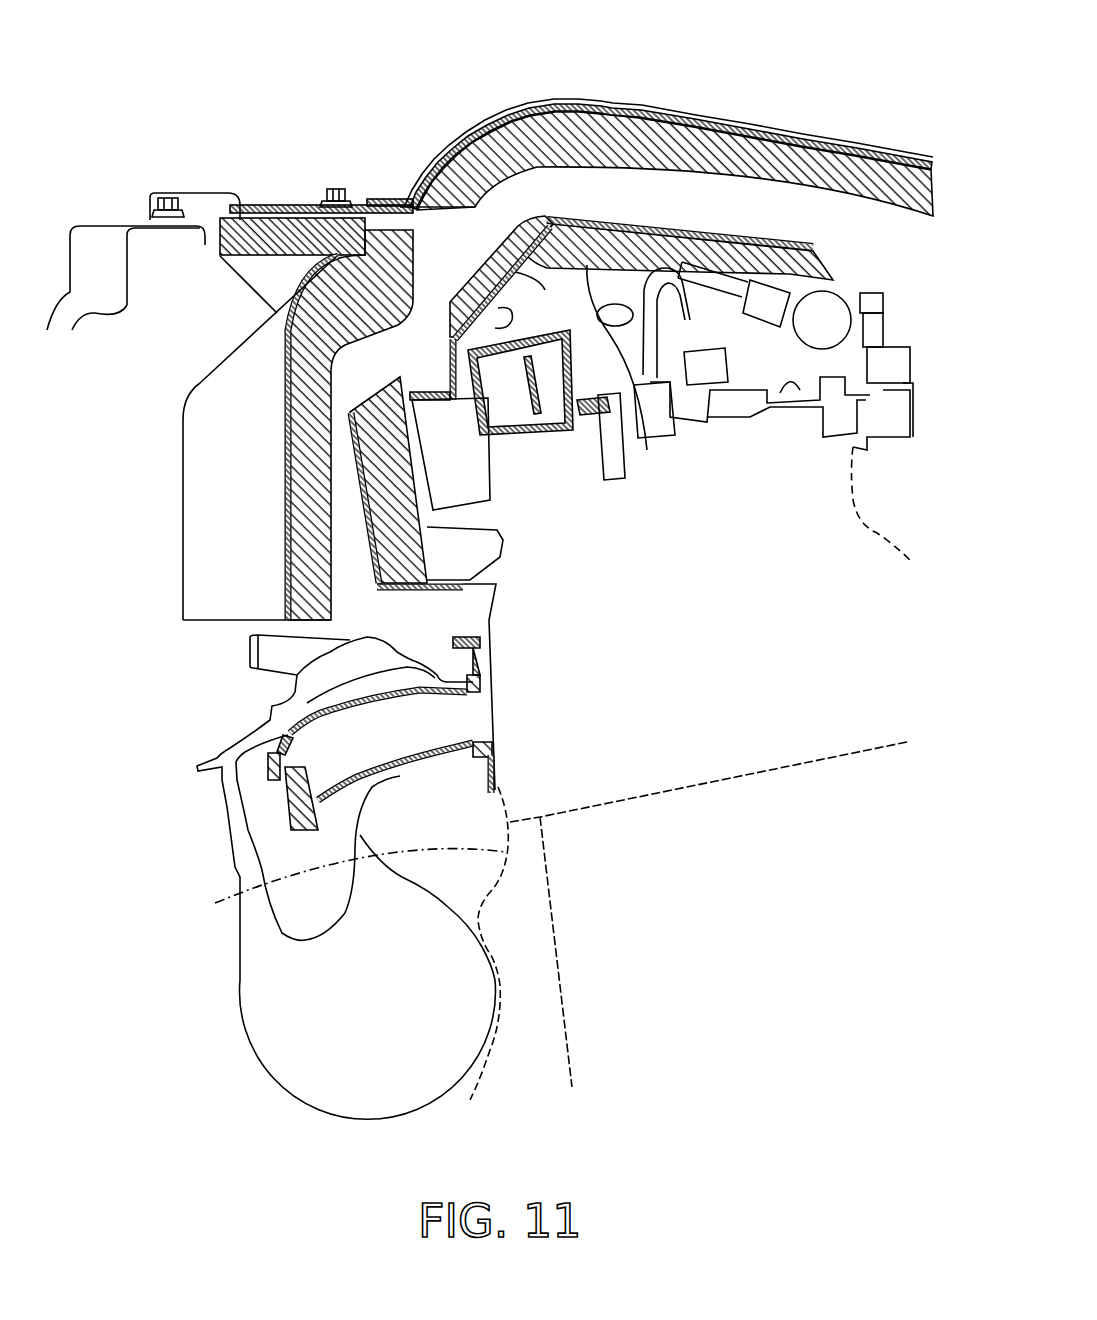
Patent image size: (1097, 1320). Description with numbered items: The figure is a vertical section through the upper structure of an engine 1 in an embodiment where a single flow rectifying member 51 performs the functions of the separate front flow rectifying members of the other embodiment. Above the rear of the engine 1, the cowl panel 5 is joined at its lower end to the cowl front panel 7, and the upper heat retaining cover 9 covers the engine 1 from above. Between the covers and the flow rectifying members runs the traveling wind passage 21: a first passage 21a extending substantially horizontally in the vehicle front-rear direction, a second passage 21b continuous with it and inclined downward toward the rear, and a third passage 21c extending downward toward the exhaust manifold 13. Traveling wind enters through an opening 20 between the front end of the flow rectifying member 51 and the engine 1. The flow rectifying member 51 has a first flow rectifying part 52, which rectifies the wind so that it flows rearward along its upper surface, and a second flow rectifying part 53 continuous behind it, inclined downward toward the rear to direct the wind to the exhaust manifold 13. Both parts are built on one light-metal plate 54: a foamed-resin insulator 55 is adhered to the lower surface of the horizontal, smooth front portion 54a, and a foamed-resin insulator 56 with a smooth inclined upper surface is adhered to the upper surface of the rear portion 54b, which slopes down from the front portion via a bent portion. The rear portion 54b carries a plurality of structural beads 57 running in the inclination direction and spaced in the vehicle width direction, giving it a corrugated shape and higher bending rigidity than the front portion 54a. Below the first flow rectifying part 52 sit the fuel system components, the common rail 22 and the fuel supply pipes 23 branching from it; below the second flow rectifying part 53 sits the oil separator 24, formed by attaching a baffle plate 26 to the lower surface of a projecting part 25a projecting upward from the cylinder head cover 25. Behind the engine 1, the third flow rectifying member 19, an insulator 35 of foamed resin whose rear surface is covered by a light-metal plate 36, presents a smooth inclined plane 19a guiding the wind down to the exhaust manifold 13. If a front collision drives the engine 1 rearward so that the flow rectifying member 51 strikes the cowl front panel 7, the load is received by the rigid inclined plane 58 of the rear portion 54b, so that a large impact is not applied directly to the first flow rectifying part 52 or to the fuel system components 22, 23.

The engine 1 is at (541, 930).
The cowl panel 5 is at (183, 468).
The cowl front panel 7 is at (97, 313).
The upper heat retaining cover 9 is at (930, 156).
The exhaust manifold 13 is at (327, 703).
The third flow rectifying member 19 is at (345, 393).
The inclined plane 19a is at (355, 355).
The opening 20 is at (850, 370).
The traveling wind passage 21 is at (648, 193).
The first passage 21a is at (617, 187).
The second passage 21b is at (468, 290).
The third passage 21c is at (352, 563).
The common rail 22 is at (818, 330).
The fuel supply pipes 23 is at (688, 445).
The oil separator 24 is at (597, 445).
The cylinder head cover 25 is at (782, 395).
The projecting part 25a is at (483, 470).
The baffle plate 26 is at (548, 445).
The insulator 35 is at (373, 517).
The plate 36 is at (352, 470).
The flow rectifying member 51 is at (832, 262).
The first flow rectifying part 52 is at (672, 210).
The second flow rectifying part 53 is at (452, 240).
The plate 54 is at (777, 240).
The front portion 54a is at (725, 235).
The rear portion 54b is at (536, 301).
The insulator 55 is at (647, 450).
The insulator 56 is at (497, 243).
The structural beads 57 is at (443, 330).
The inclined plane 58 is at (456, 305).